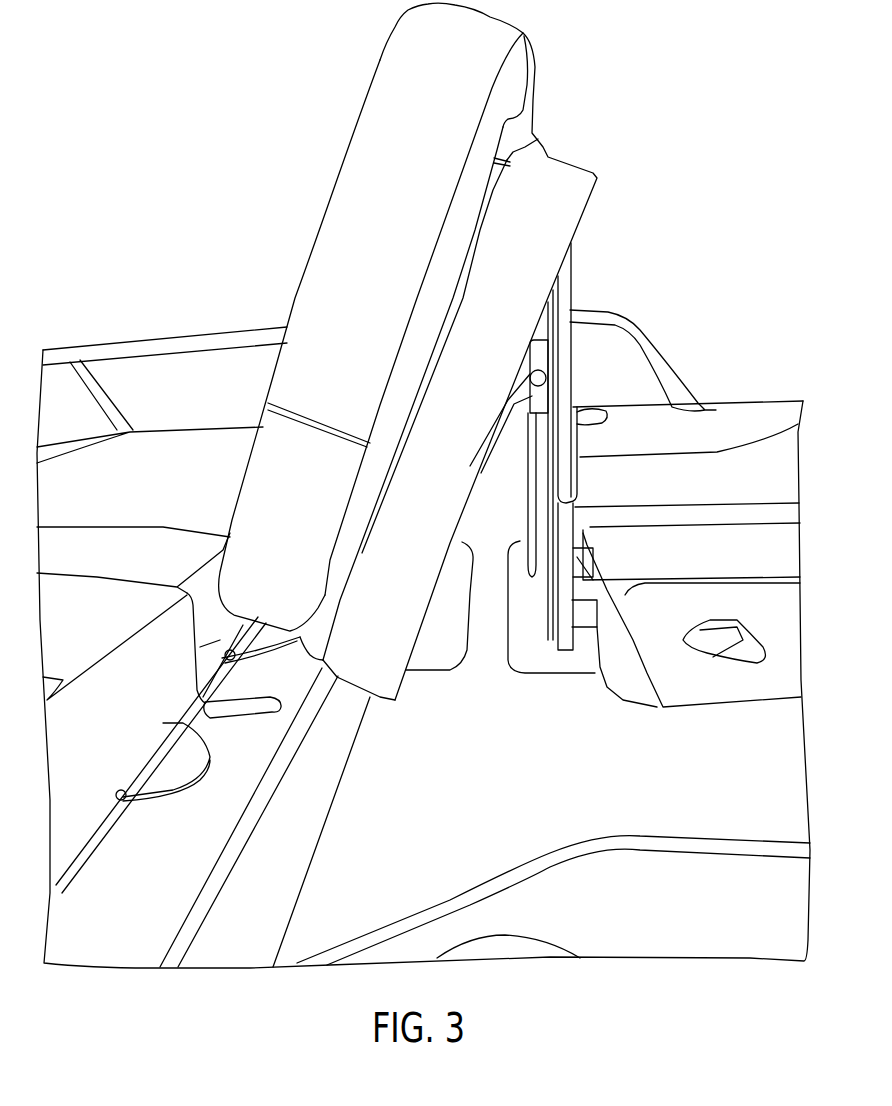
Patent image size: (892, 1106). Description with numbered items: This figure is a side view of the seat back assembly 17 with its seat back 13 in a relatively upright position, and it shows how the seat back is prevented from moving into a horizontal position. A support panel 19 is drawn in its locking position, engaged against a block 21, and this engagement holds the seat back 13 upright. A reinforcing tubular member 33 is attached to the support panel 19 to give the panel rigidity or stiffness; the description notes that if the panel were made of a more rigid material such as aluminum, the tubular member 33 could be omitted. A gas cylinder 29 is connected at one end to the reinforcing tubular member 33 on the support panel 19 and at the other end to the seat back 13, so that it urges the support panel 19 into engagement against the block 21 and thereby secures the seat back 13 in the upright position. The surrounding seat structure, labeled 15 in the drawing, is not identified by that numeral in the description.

The seat back 13 is at (410, 448).
The vehicle seat 15 is at (389, 268).
The seat back assembly 17 is at (584, 473).
The support panel 19 is at (566, 431).
The block 21 is at (583, 557).
The gas cylinder 29 is at (517, 427).
The reinforcing tubular member 33 is at (530, 577).